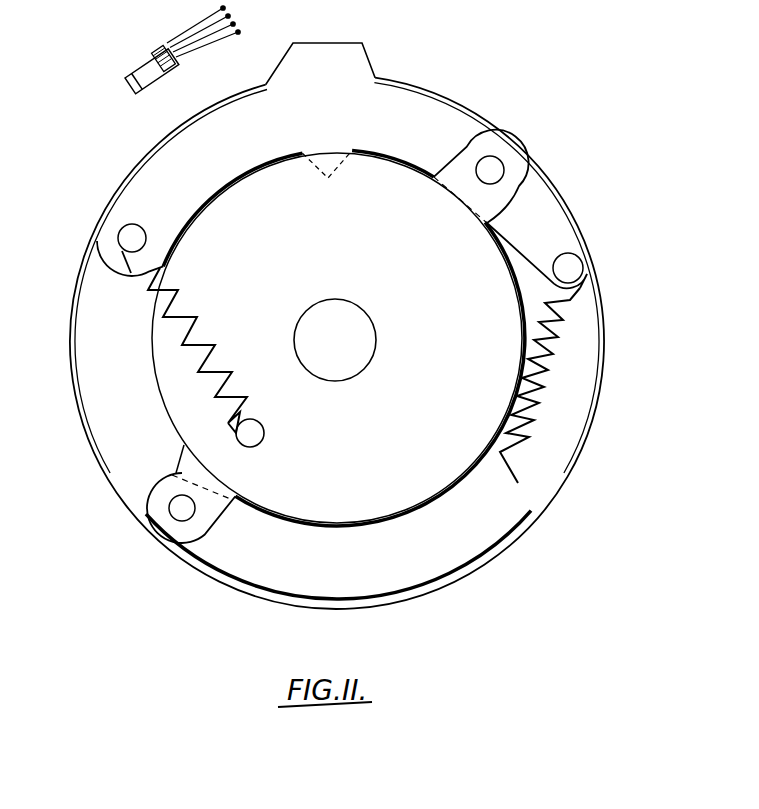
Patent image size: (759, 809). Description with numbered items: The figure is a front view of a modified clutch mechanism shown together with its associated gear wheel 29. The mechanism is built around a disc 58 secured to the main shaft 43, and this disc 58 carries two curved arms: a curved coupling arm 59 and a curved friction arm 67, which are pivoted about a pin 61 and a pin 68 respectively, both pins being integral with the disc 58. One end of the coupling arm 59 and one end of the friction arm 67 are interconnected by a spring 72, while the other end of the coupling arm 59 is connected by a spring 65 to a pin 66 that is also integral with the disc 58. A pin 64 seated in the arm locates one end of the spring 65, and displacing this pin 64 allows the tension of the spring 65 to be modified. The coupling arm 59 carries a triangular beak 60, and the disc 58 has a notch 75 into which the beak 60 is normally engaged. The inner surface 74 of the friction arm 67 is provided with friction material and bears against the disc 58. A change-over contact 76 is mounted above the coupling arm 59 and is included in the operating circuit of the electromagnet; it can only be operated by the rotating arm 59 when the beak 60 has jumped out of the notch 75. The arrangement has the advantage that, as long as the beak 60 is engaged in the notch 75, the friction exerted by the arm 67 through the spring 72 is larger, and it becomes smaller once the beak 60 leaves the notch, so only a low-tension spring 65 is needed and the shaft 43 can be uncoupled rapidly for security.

The gear wheel 29 is at (600, 409).
The main shaft 43 is at (352, 352).
The disc 58 is at (178, 436).
The curved coupling arm 59 is at (261, 92).
The triangular beak 60 is at (336, 162).
The pin 61 is at (504, 170).
The pin 64 is at (119, 236).
The spring 65 is at (212, 348).
The pin 66 is at (264, 433).
The curved arm 67 is at (413, 565).
The pin 68 is at (178, 516).
The spring 72 is at (540, 370).
The inner surface 74 is at (317, 522).
The notch 75 is at (312, 163).
The change-over contact 76 is at (168, 62).